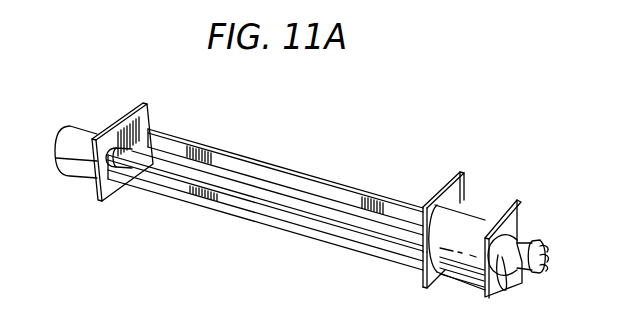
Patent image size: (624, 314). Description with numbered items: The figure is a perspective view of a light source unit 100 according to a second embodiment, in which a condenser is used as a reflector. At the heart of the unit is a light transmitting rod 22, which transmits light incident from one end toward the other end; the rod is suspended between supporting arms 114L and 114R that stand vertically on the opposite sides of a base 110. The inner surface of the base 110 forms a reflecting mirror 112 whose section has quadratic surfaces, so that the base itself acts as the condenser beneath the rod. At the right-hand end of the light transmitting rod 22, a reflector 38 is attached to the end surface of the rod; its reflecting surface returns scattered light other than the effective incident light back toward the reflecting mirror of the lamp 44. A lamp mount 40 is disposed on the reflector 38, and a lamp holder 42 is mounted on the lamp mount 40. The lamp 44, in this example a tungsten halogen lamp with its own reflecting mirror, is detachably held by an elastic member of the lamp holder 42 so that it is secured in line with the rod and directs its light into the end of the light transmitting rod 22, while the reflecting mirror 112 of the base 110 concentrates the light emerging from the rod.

The light source unit 100 is at (265, 188).
The light transmitting rod 22 is at (238, 188).
The reflector 38 is at (418, 262).
The lamp mount 40 is at (475, 213).
The lamp holder 42 is at (508, 224).
The lamp 44 is at (547, 265).
The base 110 is at (363, 193).
The reflecting mirror 112 is at (320, 187).
The supporting arm 114L is at (140, 118).
The supporting arm 114R is at (452, 193).